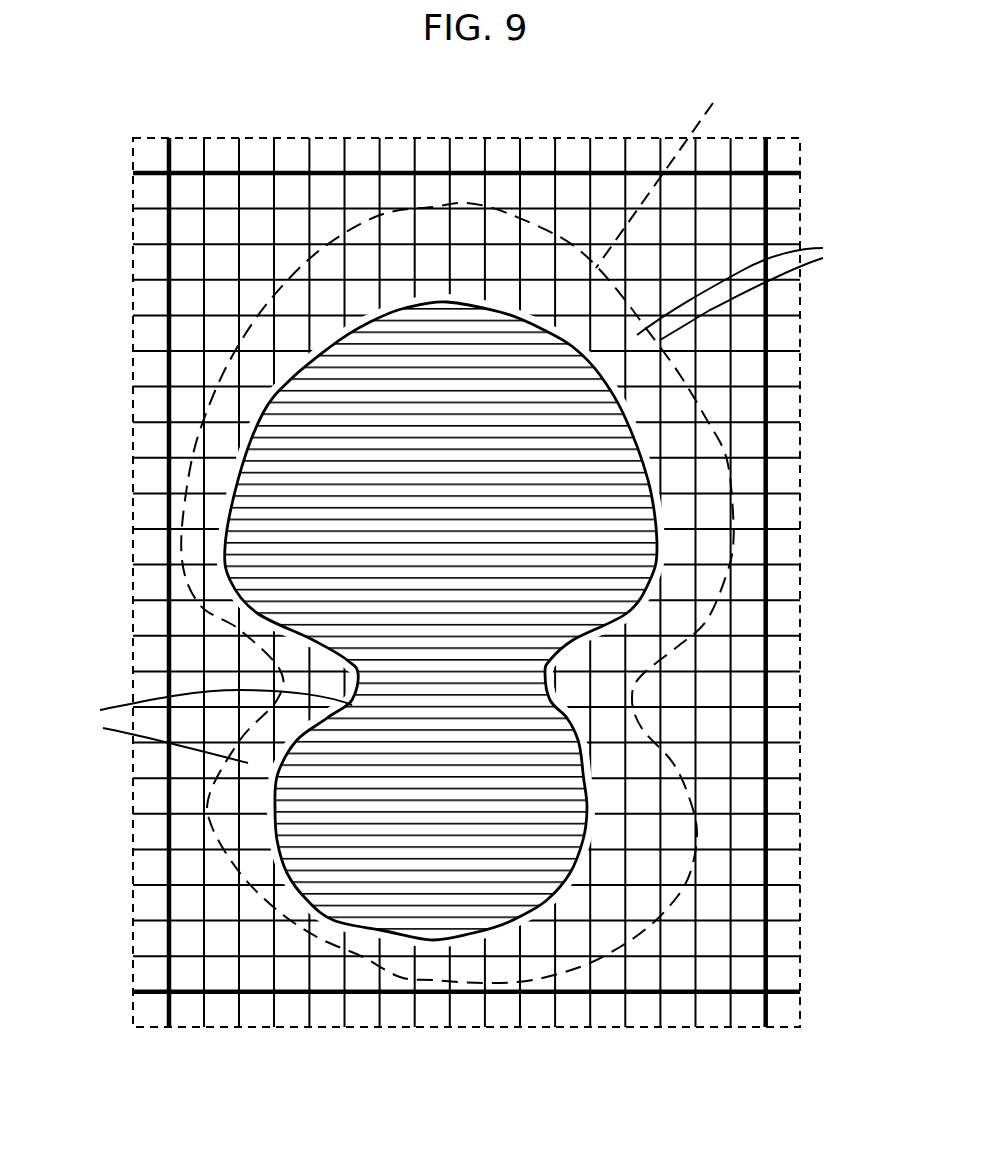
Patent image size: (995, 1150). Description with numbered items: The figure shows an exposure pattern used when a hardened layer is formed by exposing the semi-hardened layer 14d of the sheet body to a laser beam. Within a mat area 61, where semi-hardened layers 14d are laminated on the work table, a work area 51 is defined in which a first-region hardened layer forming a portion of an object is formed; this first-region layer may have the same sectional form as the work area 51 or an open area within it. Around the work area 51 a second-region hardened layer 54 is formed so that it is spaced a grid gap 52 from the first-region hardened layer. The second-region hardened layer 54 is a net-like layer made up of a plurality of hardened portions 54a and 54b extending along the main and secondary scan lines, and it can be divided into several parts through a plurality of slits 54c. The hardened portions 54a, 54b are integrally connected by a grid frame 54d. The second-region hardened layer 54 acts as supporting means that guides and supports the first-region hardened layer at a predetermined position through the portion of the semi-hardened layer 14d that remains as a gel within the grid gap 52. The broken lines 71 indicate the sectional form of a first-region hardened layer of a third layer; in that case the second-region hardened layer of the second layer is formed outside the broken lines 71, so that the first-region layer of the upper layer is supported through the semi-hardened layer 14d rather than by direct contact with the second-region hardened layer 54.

The second-region hardened layer 54 is at (253, 226).
The hardened portions extending in the main scan lines 54a is at (345, 193).
The hardened portions extending in the secondary scan lines 54b is at (218, 280).
The slits 54c is at (533, 186).
The grid frame 54d is at (768, 768).
The mat area 61 is at (605, 135).
The broken lines 71 is at (671, 171).
The semi-hardened layer 14d is at (465, 499).
The grid gap 52 is at (648, 428).
The work area 51 is at (463, 503).